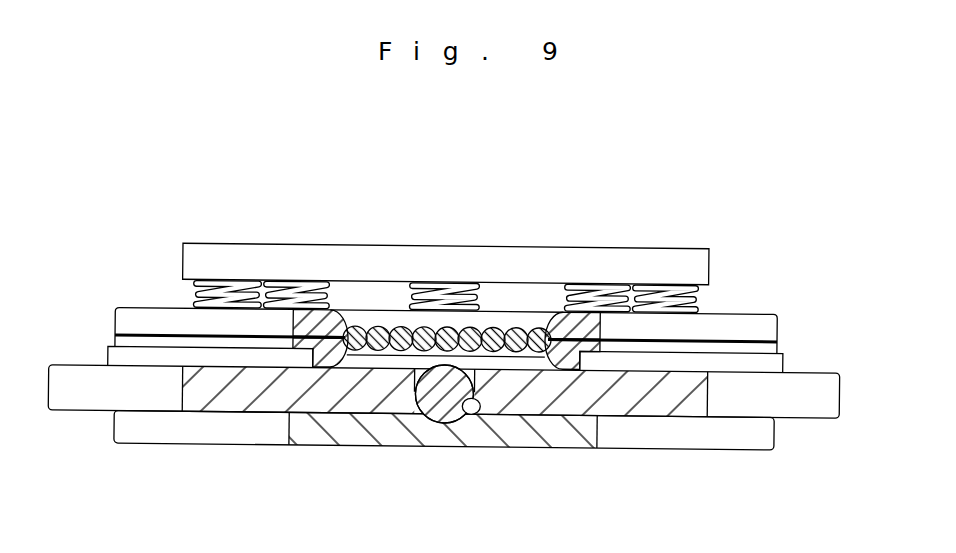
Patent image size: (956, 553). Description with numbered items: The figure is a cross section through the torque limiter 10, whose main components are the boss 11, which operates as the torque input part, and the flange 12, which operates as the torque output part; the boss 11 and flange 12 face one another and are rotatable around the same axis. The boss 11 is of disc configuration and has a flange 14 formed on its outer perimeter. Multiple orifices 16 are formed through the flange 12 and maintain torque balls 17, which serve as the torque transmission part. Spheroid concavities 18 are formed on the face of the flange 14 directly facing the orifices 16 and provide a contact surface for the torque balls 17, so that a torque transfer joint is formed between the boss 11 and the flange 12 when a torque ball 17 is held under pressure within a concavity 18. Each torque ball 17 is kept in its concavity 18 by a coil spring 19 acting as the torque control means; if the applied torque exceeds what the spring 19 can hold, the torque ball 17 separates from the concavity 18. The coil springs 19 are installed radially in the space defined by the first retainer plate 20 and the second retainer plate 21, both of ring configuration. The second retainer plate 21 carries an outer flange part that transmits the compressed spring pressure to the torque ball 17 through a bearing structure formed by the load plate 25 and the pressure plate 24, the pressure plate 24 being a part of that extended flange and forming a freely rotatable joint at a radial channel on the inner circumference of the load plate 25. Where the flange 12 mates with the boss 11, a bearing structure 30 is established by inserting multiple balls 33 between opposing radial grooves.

The torque limiter 10 is at (720, 232).
The boss 11 is at (258, 447).
The flange 12 is at (815, 369).
The flange 14 is at (120, 428).
The orifice 16 is at (460, 374).
The torque ball 17 is at (433, 412).
The spheroid concavity 18 is at (478, 406).
The coil spring 19 is at (222, 284).
The first retainer plate 20 is at (663, 246).
The second retainer plate 21 is at (752, 311).
The pressure plate 24 is at (781, 350).
The load plate 25 is at (137, 311).
The bearing structure 30 is at (447, 274).
The ball 33 is at (394, 328).